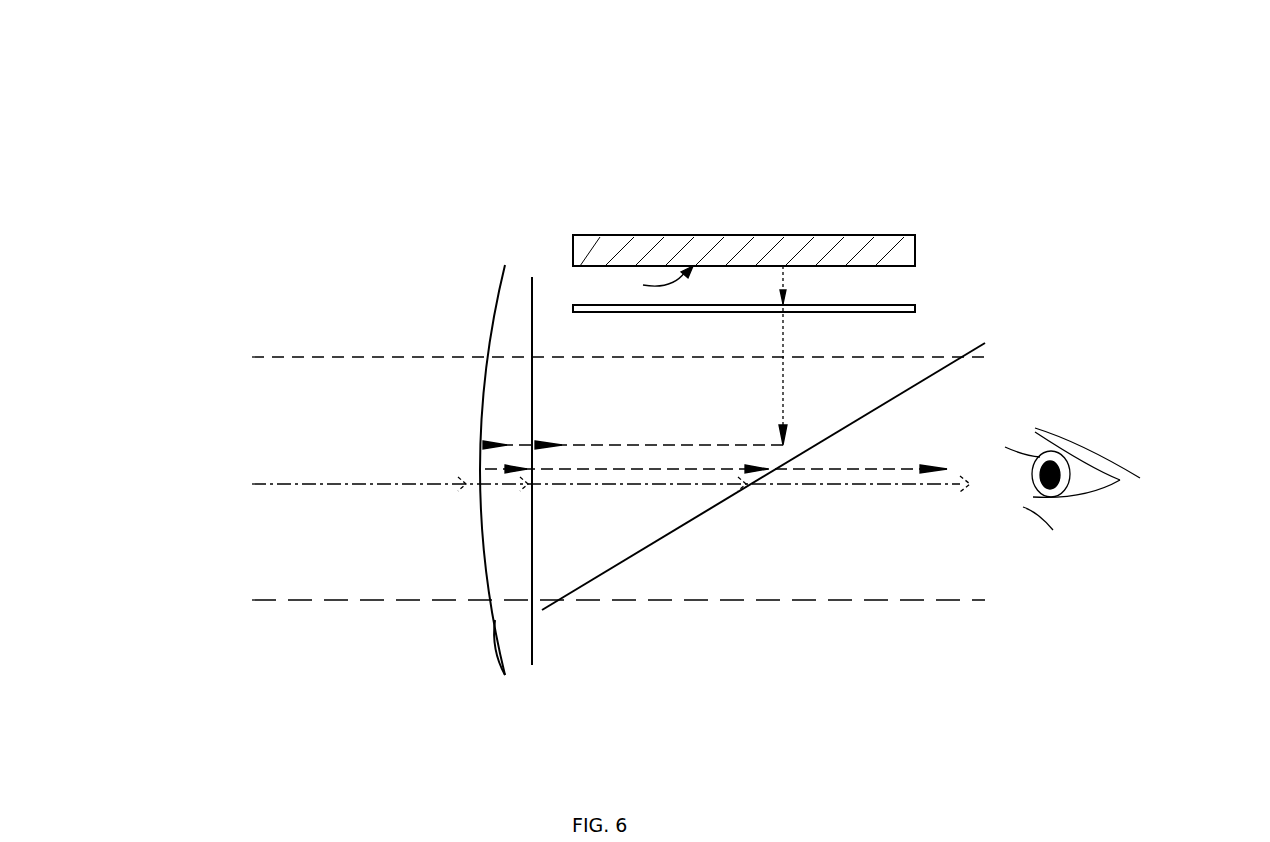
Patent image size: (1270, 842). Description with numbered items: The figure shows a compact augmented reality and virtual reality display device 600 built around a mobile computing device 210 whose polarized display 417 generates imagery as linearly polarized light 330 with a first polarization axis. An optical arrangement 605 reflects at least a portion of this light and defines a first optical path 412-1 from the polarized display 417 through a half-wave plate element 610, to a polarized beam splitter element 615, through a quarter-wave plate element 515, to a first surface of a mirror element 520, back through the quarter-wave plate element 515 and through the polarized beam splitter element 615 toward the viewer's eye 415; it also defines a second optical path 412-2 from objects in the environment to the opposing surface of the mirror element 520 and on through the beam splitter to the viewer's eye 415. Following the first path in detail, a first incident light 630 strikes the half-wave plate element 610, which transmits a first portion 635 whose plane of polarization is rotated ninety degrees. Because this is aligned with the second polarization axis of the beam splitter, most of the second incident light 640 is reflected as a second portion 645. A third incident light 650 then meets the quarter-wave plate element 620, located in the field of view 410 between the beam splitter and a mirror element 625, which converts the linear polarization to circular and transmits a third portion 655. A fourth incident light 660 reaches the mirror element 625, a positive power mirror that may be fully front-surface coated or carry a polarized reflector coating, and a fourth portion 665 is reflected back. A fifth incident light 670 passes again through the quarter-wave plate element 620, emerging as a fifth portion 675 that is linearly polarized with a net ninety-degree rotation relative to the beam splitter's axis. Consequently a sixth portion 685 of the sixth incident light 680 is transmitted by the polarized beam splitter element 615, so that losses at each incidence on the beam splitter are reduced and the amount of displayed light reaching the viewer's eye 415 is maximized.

The display device 600 is at (1115, 153).
The mobile computing device 210 is at (903, 235).
The polarized display 417 is at (628, 281).
The light 330 is at (785, 268).
The half-wave plate element 610 is at (915, 307).
The first portion 635 is at (787, 314).
The first incident light 630 is at (783, 303).
The second incident light 640 is at (790, 436).
The second portion 645 is at (768, 443).
The polarized beam splitter element 615 is at (982, 342).
The optical arrangement 605 is at (875, 627).
The mirror element 520 is at (493, 297).
The mirror element 625 is at (497, 648).
The quarter-wave plate element 515 is at (533, 317).
The quarter-wave plate element 620 is at (533, 658).
The third incident light 650 is at (537, 440).
The third portion 655 is at (532, 443).
The fourth incident light 660 is at (498, 442).
The fourth portion 665 is at (488, 470).
The fifth incident light 670 is at (533, 470).
The fifth portion 675 is at (537, 470).
The sixth incident light 680 is at (747, 470).
The sixth portion 685 is at (797, 473).
The field of view 410 is at (237, 438).
The first optical path 412-1 is at (870, 467).
The second optical path 412-2 is at (285, 487).
The eye of user 415 is at (1090, 448).